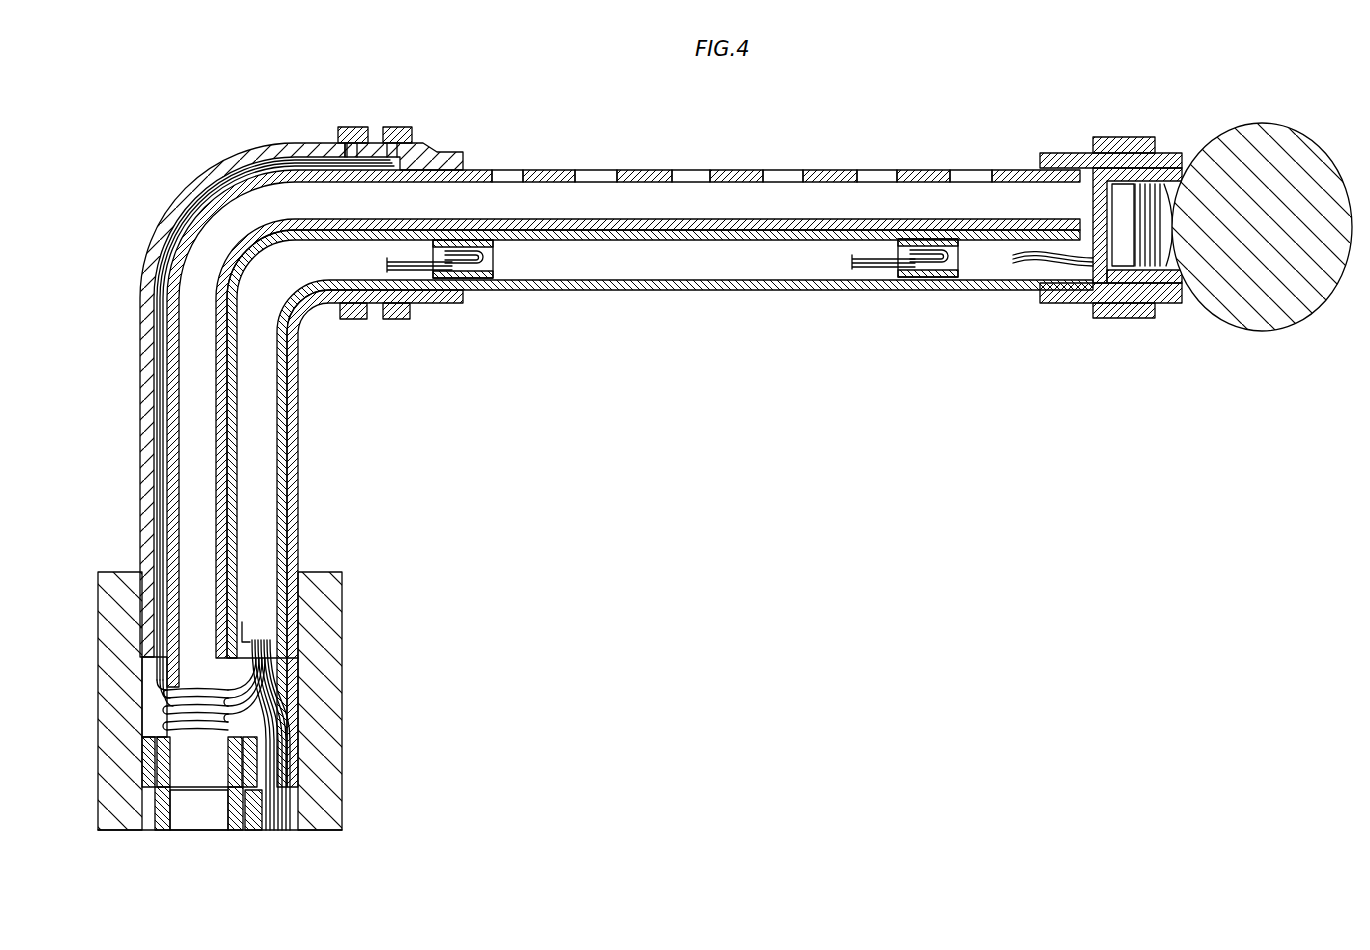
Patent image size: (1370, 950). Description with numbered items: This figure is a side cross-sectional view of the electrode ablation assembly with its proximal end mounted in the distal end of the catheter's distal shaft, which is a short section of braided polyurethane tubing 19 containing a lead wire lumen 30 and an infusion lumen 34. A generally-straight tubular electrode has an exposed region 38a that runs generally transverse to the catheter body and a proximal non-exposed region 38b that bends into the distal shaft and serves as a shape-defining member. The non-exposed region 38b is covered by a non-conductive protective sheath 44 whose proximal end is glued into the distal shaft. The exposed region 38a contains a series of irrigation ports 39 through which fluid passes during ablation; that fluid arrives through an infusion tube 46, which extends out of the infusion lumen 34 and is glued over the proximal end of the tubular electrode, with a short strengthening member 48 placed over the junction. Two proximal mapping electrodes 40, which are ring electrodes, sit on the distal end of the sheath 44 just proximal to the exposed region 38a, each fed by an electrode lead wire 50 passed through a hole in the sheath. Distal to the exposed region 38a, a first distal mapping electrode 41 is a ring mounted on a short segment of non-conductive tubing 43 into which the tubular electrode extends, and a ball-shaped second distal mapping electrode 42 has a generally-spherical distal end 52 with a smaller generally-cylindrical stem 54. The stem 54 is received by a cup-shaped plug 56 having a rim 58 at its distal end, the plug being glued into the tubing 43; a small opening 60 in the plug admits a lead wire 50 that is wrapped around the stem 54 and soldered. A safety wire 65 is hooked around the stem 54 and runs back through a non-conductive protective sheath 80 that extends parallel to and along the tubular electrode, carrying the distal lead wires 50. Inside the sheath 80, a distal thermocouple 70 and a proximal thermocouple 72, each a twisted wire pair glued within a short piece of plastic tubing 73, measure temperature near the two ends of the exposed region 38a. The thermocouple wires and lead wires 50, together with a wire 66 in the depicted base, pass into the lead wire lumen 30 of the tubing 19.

The tubing 19 is at (322, 592).
The lead wire lumen 30 is at (252, 837).
The infusion lumen 34 is at (157, 815).
The exposed region 38a is at (786, 148).
The non-exposed region 38b is at (303, 180).
The irrigation ports 39 is at (879, 172).
The proximal mapping electrodes 40 is at (352, 128).
The first distal mapping electrode 41 is at (1099, 145).
The second distal mapping electrode 42 is at (1235, 150).
The non-conductive tubing 43 is at (1041, 158).
The non-conductive protective sheath 44 is at (177, 246).
The infusion tube 46 is at (166, 830).
The strengthening member 48 is at (256, 760).
The electrode lead wire 50 is at (375, 160).
The generally-spherical distal end 52 is at (1340, 132).
The stem 54 is at (1116, 166).
The cup-shaped plug 56 is at (1111, 300).
The rim 58 is at (1185, 290).
The opening 60 is at (1056, 286).
The safety wire 65 is at (1017, 252).
The wire 66 is at (250, 630).
The distal thermocouple 70 is at (889, 266).
The proximal thermocouple 72 is at (446, 296).
The plastic tubing 73 is at (470, 277).
The protective sheath 80 is at (596, 291).